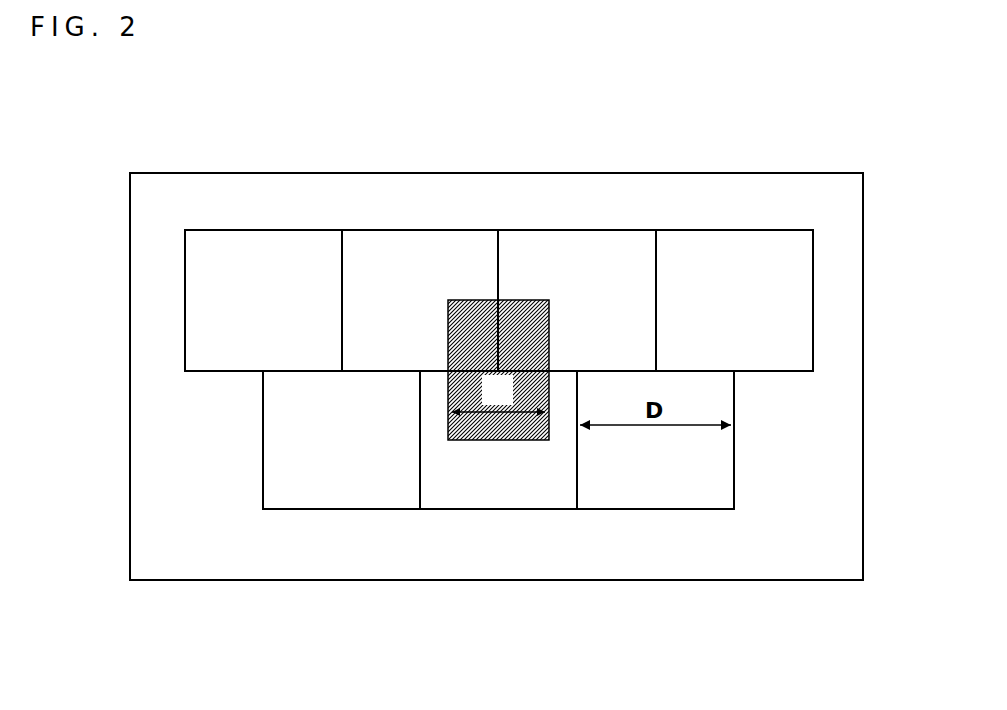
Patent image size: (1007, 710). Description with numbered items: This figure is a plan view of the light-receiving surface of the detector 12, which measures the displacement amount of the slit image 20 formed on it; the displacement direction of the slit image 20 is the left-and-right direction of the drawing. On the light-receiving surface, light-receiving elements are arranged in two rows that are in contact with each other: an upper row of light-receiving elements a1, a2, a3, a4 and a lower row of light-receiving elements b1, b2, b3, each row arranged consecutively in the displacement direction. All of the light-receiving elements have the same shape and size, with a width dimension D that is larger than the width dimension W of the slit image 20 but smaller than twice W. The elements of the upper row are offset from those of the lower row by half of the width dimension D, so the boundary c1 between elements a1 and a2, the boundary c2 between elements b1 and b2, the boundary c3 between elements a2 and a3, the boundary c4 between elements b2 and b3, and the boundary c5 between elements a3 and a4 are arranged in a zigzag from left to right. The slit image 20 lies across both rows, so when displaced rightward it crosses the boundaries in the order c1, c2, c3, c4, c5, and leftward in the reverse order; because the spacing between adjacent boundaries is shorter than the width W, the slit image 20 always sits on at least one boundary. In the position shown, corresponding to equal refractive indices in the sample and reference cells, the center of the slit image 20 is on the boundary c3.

The detector 12 is at (780, 172).
The slit image 20 is at (533, 352).
The light-receiving element a1 is at (245, 248).
The light-receiving element a2 is at (415, 250).
The light-receiving element a3 is at (577, 250).
The light-receiving element a4 is at (740, 250).
The light-receiving element b1 is at (317, 492).
The light-receiving element b2 is at (452, 492).
The light-receiving element b3 is at (616, 492).
The boundary c1 is at (342, 256).
The boundary c2 is at (420, 505).
The boundary c3 is at (498, 256).
The boundary c4 is at (577, 505).
The boundary c5 is at (656, 256).